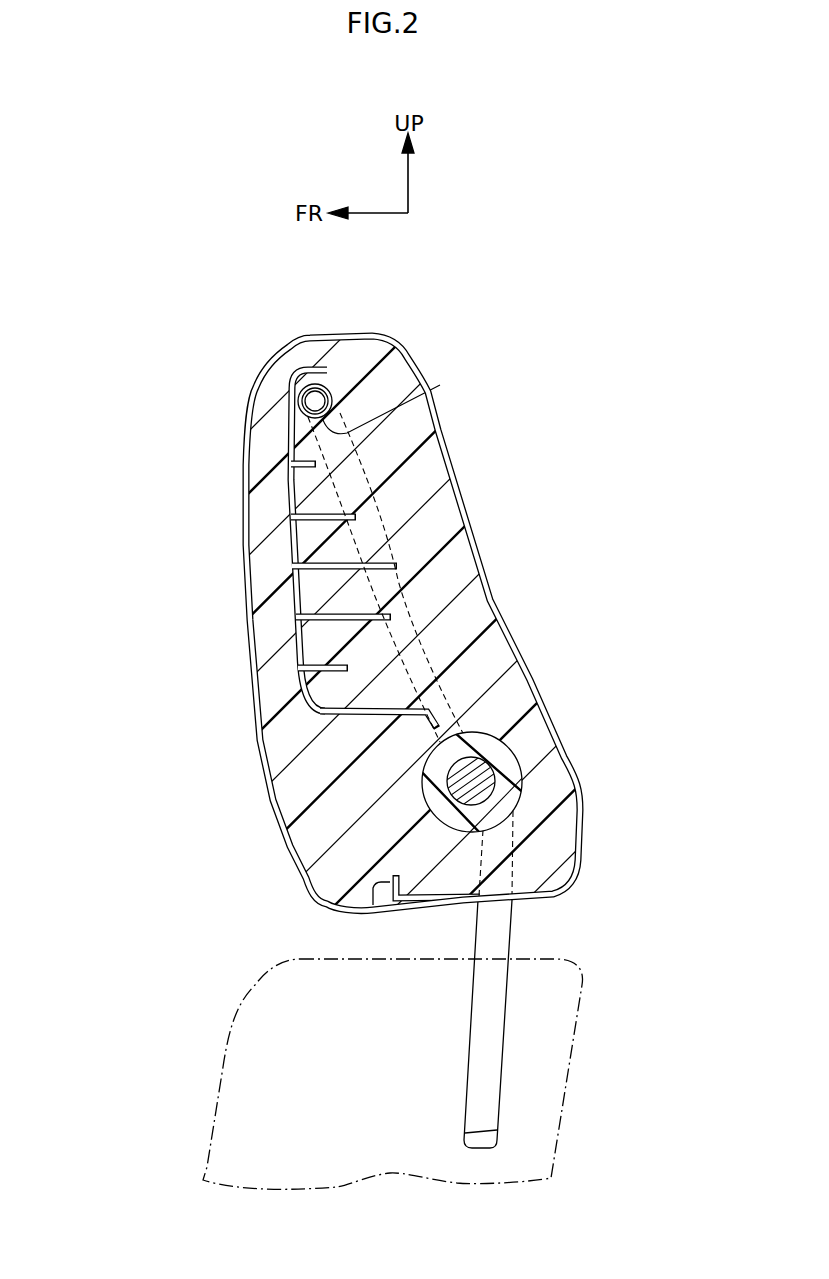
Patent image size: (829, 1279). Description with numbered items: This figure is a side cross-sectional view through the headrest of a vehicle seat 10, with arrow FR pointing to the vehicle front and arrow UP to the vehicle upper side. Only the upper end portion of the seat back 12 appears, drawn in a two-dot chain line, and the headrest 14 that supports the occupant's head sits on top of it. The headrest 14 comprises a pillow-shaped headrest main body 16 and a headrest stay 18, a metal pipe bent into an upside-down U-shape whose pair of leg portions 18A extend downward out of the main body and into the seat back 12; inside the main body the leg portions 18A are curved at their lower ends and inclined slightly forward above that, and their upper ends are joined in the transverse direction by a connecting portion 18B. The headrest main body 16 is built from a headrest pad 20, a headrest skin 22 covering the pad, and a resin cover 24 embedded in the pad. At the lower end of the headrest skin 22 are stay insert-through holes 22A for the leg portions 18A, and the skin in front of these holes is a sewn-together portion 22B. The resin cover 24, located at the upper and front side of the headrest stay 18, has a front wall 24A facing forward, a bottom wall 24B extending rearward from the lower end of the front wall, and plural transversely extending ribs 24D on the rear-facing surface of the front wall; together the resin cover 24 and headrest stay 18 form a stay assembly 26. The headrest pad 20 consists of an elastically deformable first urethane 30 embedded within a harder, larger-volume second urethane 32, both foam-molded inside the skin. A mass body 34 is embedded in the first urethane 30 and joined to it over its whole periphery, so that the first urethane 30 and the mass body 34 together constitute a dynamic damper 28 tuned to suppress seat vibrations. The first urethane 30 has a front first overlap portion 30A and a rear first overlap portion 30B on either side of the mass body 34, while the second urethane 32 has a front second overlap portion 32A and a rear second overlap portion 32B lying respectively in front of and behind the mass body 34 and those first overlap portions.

The vehicle seat 10 is at (598, 350).
The seat back 12 is at (597, 954).
The headrest 14 is at (140, 430).
The headrest main body 16 is at (213, 480).
The headrest stay 18 is at (459, 941).
The leg portions 18A is at (505, 925).
The connecting portion 18B is at (440, 383).
The headrest pad 20 is at (253, 659).
The headrest skin 22 is at (231, 606).
The stay insert-through holes 22A is at (480, 893).
The sewn-together portion 22B is at (366, 912).
The resin cover 24 is at (271, 528).
The front wall 24A is at (285, 563).
The bottom wall 24B is at (308, 722).
The ribs 24D is at (410, 580).
The stay assembly 26 is at (409, 517).
The dynamic damper 28 is at (552, 820).
The first urethane 30 is at (520, 735).
The first overlap portion 30A is at (423, 778).
The first overlap portion 30B is at (517, 760).
The second urethane 32 is at (513, 657).
The second overlap portion 32A is at (290, 797).
The second overlap portion 32B is at (537, 809).
The mass body 34 is at (520, 785).